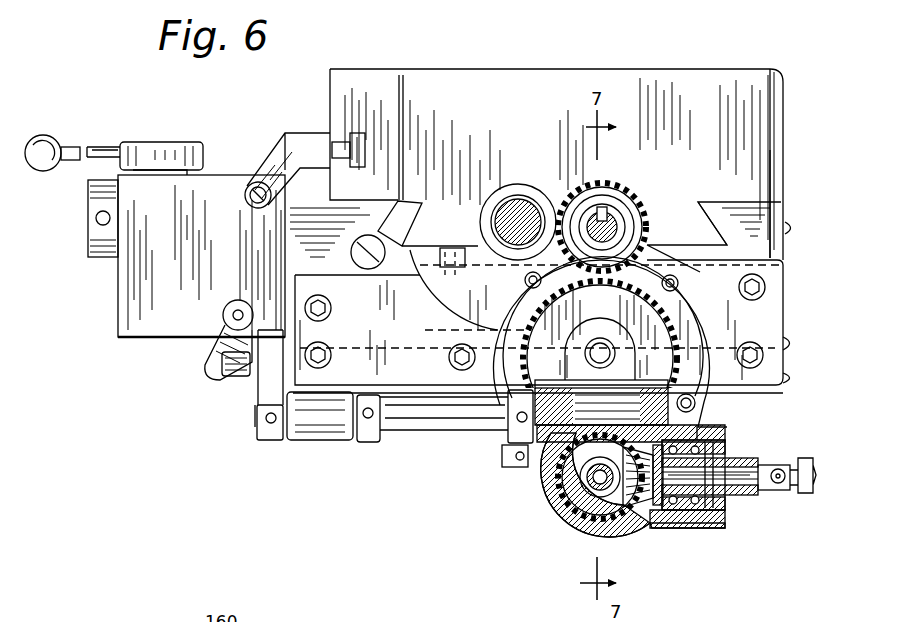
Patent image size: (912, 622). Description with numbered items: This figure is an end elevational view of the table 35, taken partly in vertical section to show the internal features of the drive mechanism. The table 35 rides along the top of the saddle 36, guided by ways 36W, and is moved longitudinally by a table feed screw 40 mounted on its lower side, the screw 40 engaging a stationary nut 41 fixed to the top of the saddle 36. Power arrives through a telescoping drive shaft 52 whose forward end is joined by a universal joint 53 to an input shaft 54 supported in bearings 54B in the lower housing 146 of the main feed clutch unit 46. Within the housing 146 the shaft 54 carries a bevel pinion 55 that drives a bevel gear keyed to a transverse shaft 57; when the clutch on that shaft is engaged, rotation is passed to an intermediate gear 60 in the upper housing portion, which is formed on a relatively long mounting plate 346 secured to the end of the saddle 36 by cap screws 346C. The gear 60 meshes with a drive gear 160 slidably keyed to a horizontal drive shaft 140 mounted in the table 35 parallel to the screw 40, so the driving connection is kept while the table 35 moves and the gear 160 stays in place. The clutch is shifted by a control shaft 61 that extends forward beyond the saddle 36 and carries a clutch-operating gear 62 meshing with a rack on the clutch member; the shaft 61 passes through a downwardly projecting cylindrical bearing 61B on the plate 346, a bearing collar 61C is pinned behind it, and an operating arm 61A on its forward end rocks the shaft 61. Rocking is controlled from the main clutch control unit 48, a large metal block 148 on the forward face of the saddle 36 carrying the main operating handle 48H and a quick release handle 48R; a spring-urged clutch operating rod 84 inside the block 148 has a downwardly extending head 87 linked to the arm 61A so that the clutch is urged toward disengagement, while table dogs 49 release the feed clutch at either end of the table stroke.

The table 35 is at (650, 80).
The saddle 36 is at (757, 228).
The ways 36W is at (700, 207).
The table feed screw 40 is at (518, 210).
The stationary nut 41 is at (490, 208).
The main feed clutch unit 46 is at (702, 404).
The main clutch control unit 48 is at (155, 241).
The main operating handle 48H is at (70, 150).
The quick release handle 48R is at (95, 222).
The table dogs 49 is at (270, 178).
The telescoping drive shaft 52 is at (807, 493).
The universal joint 53 is at (773, 491).
The input shaft 54 is at (730, 497).
The bearings 54B is at (693, 497).
The bevel pinion 55 is at (647, 498).
The transverse shaft 57 is at (600, 476).
The intermediate gear 60 is at (676, 291).
The control shaft 61 is at (425, 432).
The operating arm 61A is at (262, 393).
The cylindrical bearing 61B is at (300, 436).
The bearing collar 61C is at (368, 442).
The clutch-operating gear 62 is at (508, 432).
The clutch operating rod 84 is at (222, 315).
The head 87 is at (208, 367).
The horizontal drive shaft 140 is at (612, 222).
The lower housing 146 is at (560, 530).
The metal block 148 is at (132, 283).
The drive gear 160 is at (640, 212).
The mounting plate 346 is at (775, 296).
The cap screws 346C is at (332, 312).